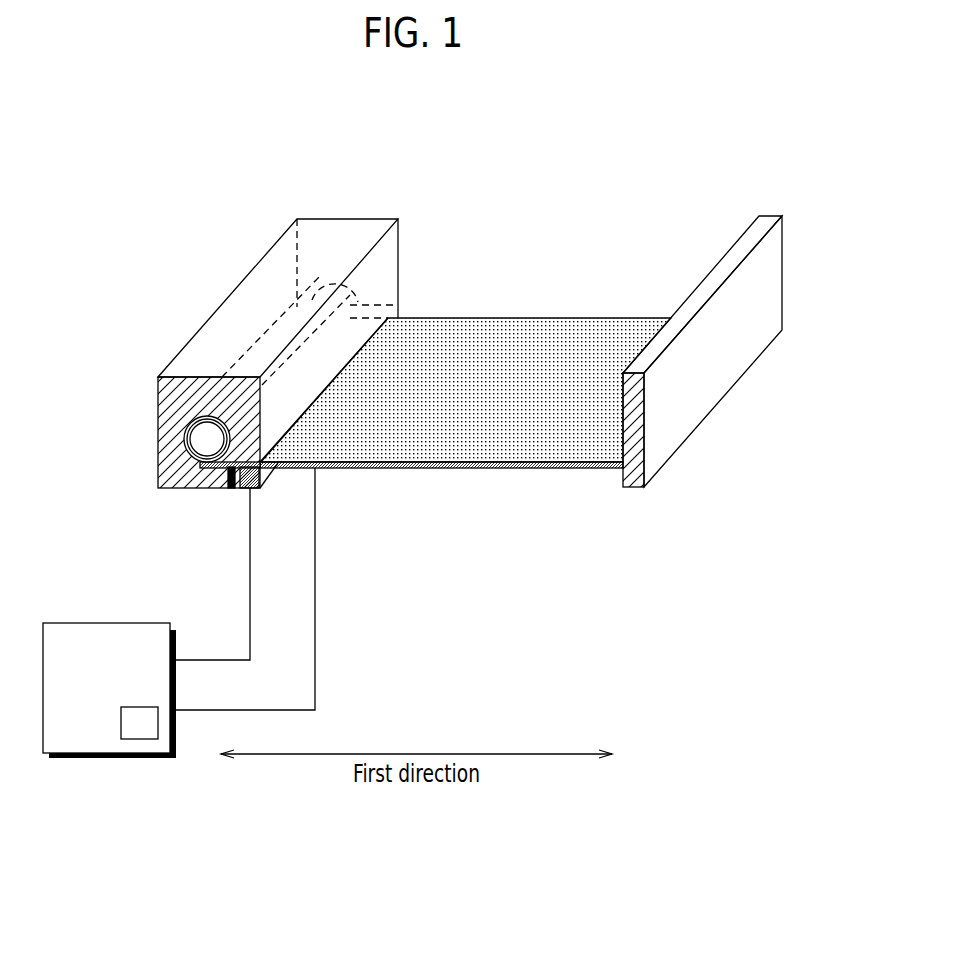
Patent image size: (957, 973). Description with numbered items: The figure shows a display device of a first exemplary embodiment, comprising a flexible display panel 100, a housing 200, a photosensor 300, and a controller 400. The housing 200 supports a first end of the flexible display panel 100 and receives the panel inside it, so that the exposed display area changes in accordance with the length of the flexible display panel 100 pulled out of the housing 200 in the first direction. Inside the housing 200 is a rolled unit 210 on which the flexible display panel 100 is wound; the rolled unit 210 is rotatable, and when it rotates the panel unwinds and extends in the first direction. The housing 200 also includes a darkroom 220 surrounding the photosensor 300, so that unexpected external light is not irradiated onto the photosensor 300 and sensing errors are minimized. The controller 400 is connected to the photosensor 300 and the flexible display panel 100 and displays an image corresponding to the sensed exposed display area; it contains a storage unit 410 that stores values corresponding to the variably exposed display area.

The flexible display panel 100 is at (528, 332).
The housing 200 is at (262, 283).
The rolled unit 210 is at (203, 440).
The darkroom 220 is at (226, 478).
The photosensor 300 is at (245, 488).
The controller 400 is at (128, 623).
The storage unit 410 is at (142, 739).